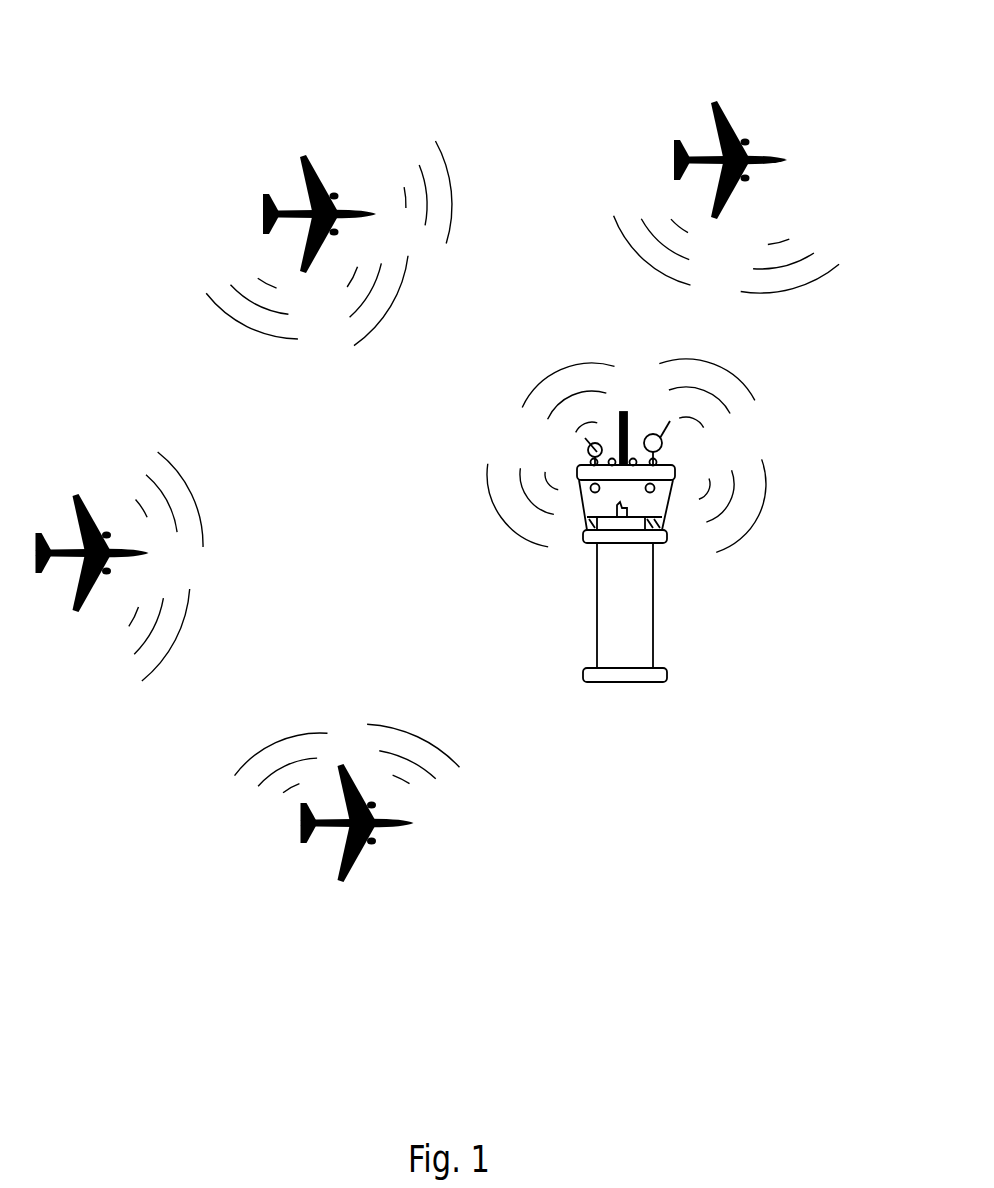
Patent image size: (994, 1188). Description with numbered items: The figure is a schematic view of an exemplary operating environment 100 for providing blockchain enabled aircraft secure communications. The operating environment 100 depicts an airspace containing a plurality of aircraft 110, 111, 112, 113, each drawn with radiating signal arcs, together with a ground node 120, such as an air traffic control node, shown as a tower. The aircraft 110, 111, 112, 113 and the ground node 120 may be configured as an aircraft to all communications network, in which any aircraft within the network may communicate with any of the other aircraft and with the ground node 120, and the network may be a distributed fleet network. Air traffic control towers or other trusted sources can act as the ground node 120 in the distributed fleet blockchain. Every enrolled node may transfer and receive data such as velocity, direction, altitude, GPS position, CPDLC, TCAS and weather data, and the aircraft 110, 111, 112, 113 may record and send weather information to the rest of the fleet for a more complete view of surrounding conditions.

The operating environment 100 is at (495, 34).
The aircraft 110 is at (257, 159).
The aircraft 111 is at (828, 92).
The aircraft 112 is at (55, 603).
The aircraft 113 is at (305, 870).
The ground node 120 is at (679, 584).